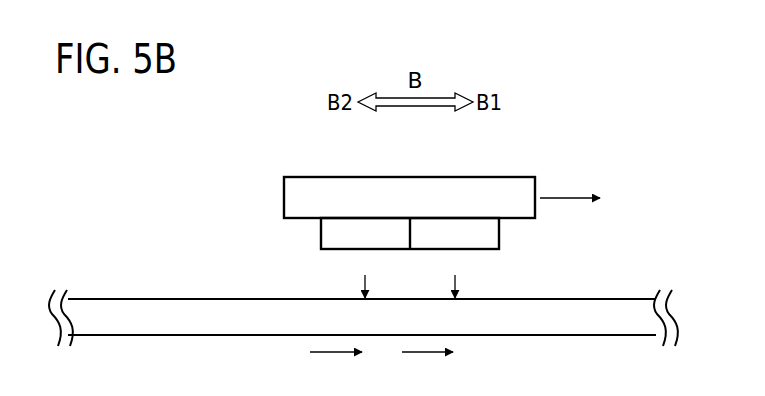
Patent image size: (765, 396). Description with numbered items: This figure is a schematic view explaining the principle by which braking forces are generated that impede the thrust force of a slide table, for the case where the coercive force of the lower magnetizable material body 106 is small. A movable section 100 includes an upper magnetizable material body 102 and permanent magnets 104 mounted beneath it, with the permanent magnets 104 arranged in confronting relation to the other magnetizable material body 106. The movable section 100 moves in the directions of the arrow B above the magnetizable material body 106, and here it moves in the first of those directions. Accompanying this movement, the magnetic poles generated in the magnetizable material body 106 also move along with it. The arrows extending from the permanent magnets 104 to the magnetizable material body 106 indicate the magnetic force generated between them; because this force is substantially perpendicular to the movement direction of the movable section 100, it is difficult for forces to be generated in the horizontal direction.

The movable section 100 is at (447, 204).
The magnetizable material body 102 is at (420, 176).
The permanent magnets 104 is at (488, 233).
The magnetizable material body 106 is at (620, 310).